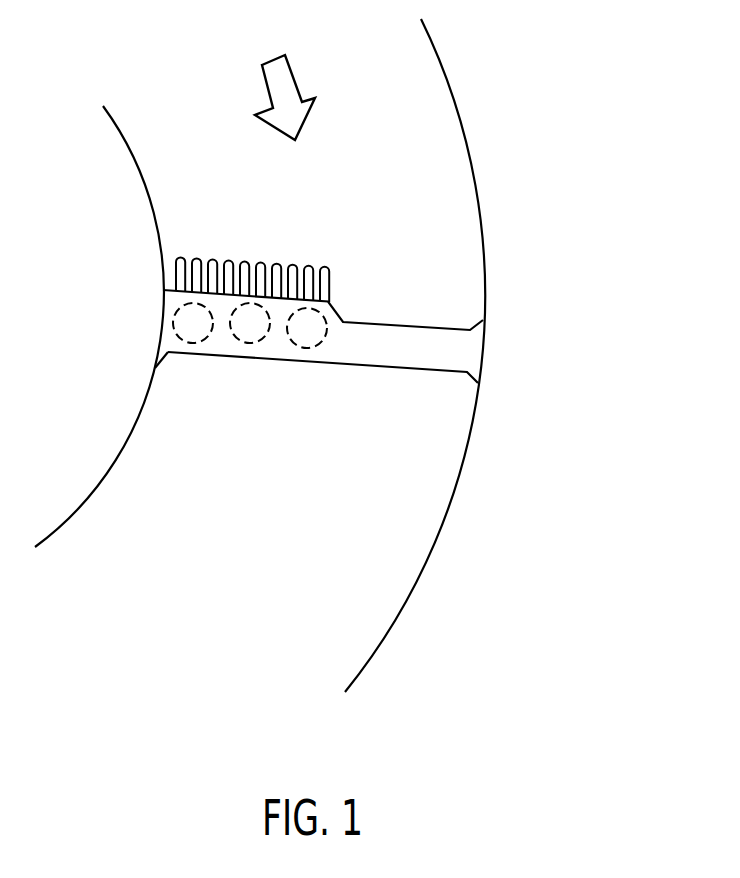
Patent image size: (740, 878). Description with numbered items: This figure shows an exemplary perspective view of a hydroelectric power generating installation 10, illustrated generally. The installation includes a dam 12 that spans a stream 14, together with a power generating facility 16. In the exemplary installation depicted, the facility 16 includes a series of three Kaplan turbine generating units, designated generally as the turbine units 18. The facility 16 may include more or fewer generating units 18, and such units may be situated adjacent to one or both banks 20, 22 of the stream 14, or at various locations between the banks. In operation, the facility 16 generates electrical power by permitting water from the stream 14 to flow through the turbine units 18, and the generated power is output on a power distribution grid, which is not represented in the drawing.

The hydroelectric power generating installation 10 is at (446, 302).
The dam 12 is at (460, 353).
The stream 14 is at (369, 194).
The power generating facility 16 is at (172, 342).
The Kaplan turbine generating units 18 is at (300, 346).
The bank 20 is at (127, 245).
The bank 22 is at (540, 191).